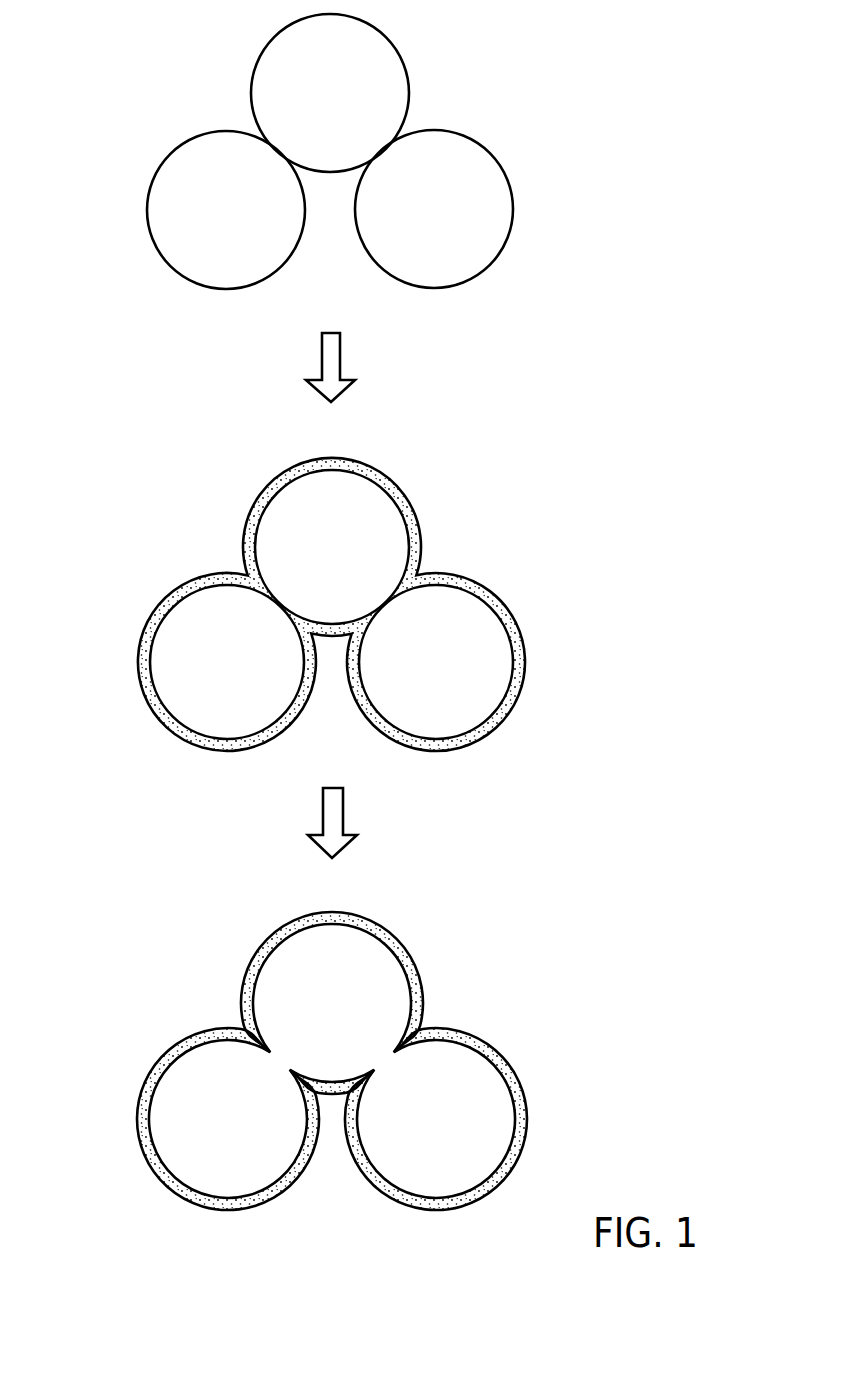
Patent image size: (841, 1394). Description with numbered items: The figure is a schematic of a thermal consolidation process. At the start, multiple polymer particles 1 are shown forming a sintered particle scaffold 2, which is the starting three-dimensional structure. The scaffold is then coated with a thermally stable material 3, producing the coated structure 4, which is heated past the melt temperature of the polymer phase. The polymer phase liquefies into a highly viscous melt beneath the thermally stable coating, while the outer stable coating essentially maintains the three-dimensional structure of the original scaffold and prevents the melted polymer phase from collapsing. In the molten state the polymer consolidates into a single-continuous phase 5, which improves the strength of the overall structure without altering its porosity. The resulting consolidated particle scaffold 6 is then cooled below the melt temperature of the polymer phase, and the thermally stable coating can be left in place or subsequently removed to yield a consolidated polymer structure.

The polymer particles 1 is at (370, 100).
The sintered particle scaffold 2 is at (120, 13).
The thermally stable material 3 is at (413, 520).
The coated structure 4 is at (122, 470).
The single-continuous phase 5 is at (388, 1062).
The consolidated particle scaffold 6 is at (123, 927).